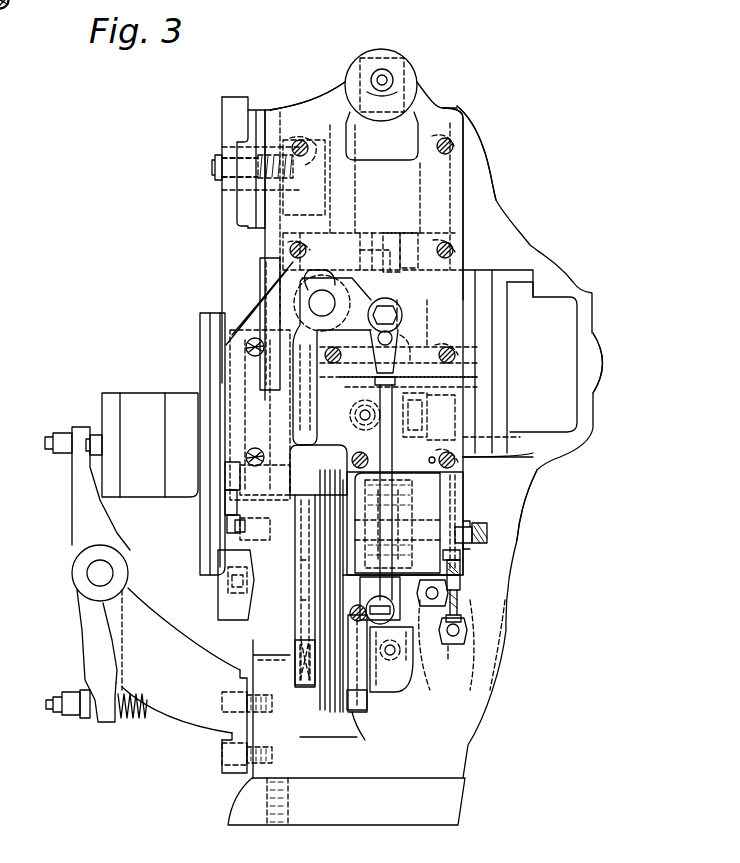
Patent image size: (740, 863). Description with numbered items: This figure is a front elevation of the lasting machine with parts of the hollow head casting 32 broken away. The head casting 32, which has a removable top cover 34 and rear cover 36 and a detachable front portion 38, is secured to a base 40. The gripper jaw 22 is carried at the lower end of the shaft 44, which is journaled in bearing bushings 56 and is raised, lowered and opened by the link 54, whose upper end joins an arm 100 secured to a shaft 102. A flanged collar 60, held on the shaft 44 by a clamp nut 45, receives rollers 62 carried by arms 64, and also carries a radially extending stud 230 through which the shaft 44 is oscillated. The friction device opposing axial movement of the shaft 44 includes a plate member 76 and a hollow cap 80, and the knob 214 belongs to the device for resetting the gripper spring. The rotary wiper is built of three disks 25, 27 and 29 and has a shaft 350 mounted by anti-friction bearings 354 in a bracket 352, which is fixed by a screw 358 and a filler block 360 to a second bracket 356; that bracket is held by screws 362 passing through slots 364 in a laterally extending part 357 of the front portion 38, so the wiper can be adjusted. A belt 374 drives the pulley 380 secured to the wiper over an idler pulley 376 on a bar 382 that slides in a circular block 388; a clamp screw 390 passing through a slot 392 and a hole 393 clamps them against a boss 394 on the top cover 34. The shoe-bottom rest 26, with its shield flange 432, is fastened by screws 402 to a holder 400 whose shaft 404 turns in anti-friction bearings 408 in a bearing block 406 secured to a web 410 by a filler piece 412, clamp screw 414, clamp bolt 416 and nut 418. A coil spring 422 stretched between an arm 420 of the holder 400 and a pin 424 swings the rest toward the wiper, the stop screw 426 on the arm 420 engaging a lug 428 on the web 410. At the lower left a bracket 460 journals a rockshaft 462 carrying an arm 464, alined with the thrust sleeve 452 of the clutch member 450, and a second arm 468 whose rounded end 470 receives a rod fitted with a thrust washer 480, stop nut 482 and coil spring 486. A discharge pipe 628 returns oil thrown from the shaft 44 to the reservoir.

The gripper jaw 22 is at (367, 704).
The disk 25 is at (341, 722).
The shoe-bottom rest 26 is at (362, 714).
The disk 27 is at (336, 722).
The disk 29 is at (332, 705).
The head casting 32 is at (545, 464).
The top cover 34 is at (462, 110).
The rear cover 36 is at (429, 461).
The front portion 38 is at (466, 190).
The base 40 is at (240, 800).
The shaft 44 is at (386, 233).
The clamp nut 45 is at (328, 450).
The link 54 is at (482, 459).
The bearing bushings 56 is at (404, 242).
The flanged collar 60 is at (421, 427).
The rollers 62 is at (402, 345).
The arms 64 is at (322, 380).
The plate member 76 is at (482, 275).
The hollow cap 80 is at (575, 298).
The arm 100 is at (378, 300).
The shaft 102 is at (326, 296).
The knob 214 is at (412, 68).
The stud 230 is at (498, 437).
The shaft 350 is at (226, 608).
The bracket 352 is at (238, 514).
The anti-friction bearings 354 is at (272, 660).
The second bracket 356 is at (226, 480).
The laterally extending part 357 is at (235, 330).
The screw 358 is at (244, 528).
The filler block 360 is at (232, 496).
The screws 362 is at (250, 352).
The slots 364 is at (240, 432).
The belt 374 is at (276, 702).
The idler pulley 376 is at (258, 264).
The pulley 380 is at (293, 674).
The bar 382 is at (222, 116).
The circular block 388 is at (262, 110).
The clamp screw 390 is at (214, 168).
The slot 392 is at (226, 196).
The hole 393 is at (284, 188).
The boss 394 is at (288, 110).
The holder 400 is at (380, 690).
The screws 402 is at (327, 682).
The shaft 404 is at (372, 598).
The bearing block 406 is at (447, 506).
The anti-friction bearings 408 is at (402, 655).
The web 410 is at (508, 500).
The tongue-and-groove filler piece 412 is at (462, 570).
The clamp screw 414 is at (462, 556).
The clamp bolt 416 is at (490, 537).
The nut 418 is at (490, 527).
The arm 420 is at (456, 640).
The coil spring 422 is at (460, 600).
The pin 424 is at (462, 584).
The stop screw 426 is at (466, 616).
The lug 428 is at (457, 654).
The flange 432 is at (355, 718).
The clutch member 450 is at (202, 328).
The thrust sleeve 452 is at (128, 393).
The bracket 460 is at (154, 620).
The rockshaft 462 is at (88, 565).
The arm 464 is at (70, 478).
The second arm 468 is at (76, 638).
The rounded end portion 470 is at (100, 724).
The thrust washer 480 is at (84, 722).
The stop nut 482 is at (64, 718).
The coil spring 486 is at (138, 712).
The discharge pipe 628 is at (466, 634).